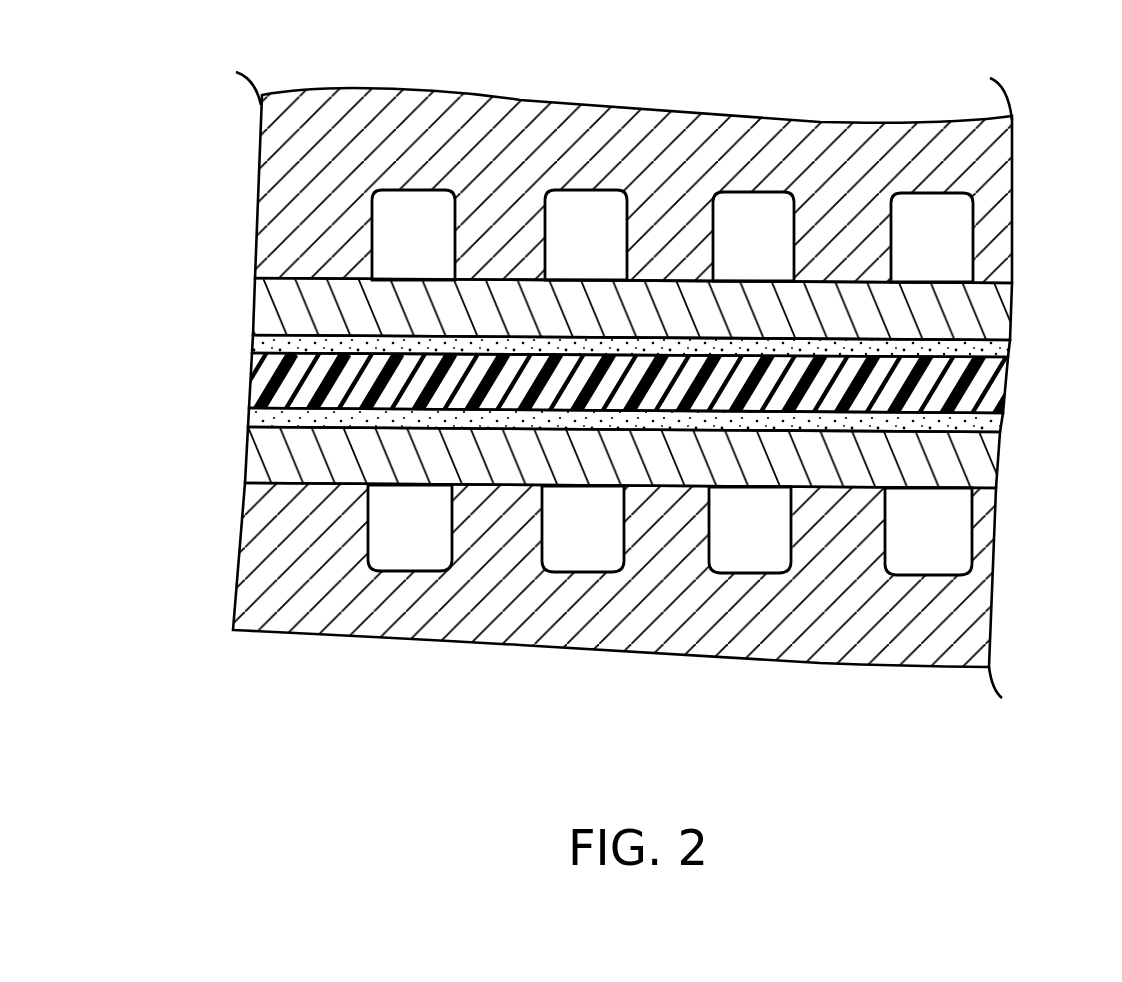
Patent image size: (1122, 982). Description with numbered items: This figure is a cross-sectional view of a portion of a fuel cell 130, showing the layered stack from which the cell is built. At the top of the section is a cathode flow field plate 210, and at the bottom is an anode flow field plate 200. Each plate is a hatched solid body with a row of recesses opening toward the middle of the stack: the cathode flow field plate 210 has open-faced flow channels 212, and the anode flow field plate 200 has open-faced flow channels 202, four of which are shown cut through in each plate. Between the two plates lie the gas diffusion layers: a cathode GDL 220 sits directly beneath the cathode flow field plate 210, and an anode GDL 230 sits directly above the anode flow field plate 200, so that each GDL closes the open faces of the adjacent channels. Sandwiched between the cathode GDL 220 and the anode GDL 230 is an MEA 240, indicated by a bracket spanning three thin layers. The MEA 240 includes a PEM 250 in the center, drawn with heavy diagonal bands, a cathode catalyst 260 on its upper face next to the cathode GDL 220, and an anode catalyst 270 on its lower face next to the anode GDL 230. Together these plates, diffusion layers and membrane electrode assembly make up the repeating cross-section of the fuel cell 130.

The fuel cell 130 is at (629, 431).
The anode flow field plate 200 is at (683, 647).
The open-faced flow channels 202 is at (587, 583).
The cathode flow field plate 210 is at (701, 125).
The open-faced flow channels 212 is at (588, 175).
The cathode GDL 220 is at (1008, 308).
The anode GDL 230 is at (988, 468).
The MEA 240 is at (629, 381).
The PEM 250 is at (1000, 383).
The cathode catalyst 260 is at (1000, 352).
The anode catalyst 270 is at (992, 422).